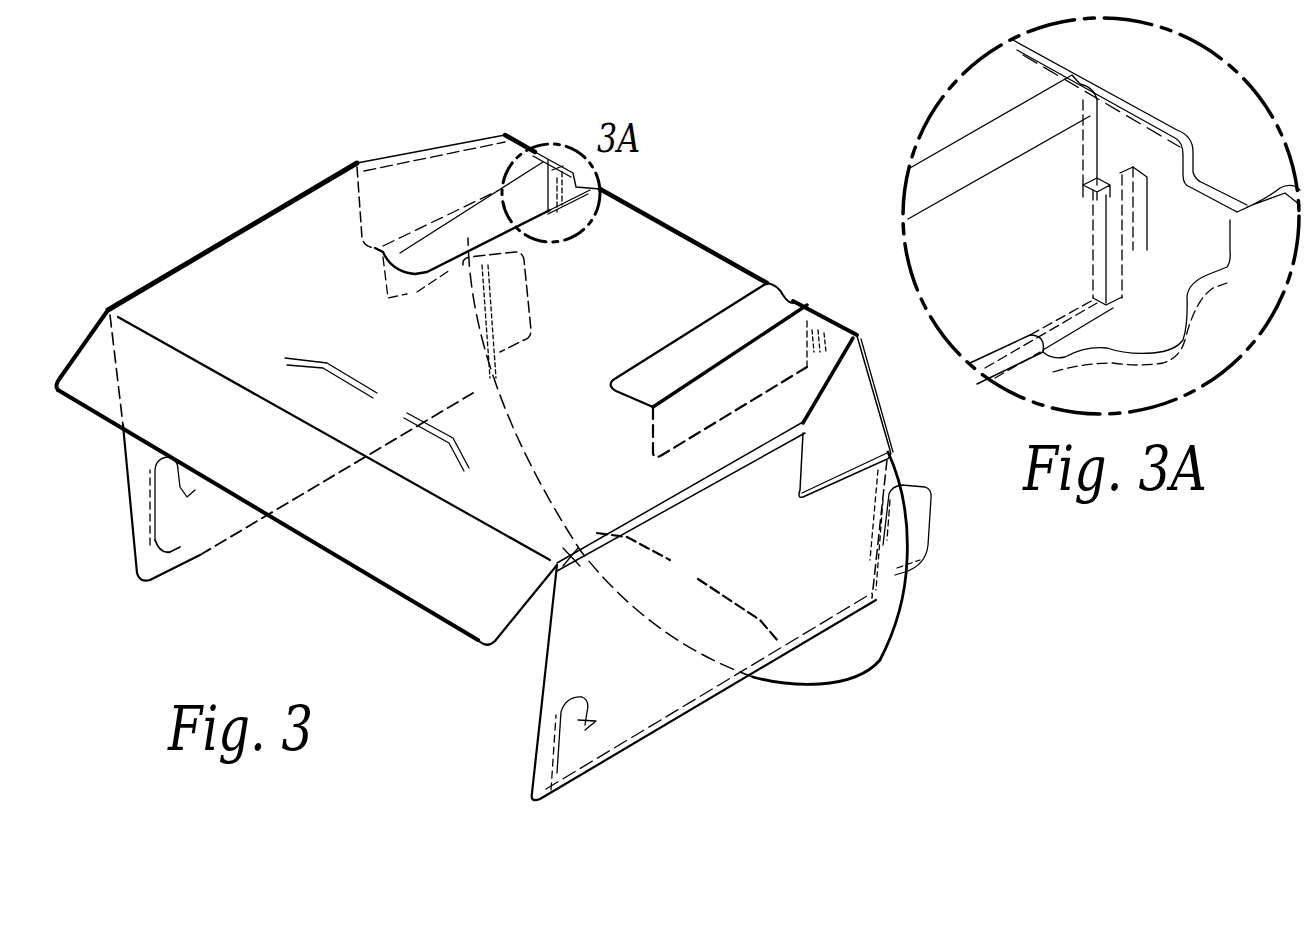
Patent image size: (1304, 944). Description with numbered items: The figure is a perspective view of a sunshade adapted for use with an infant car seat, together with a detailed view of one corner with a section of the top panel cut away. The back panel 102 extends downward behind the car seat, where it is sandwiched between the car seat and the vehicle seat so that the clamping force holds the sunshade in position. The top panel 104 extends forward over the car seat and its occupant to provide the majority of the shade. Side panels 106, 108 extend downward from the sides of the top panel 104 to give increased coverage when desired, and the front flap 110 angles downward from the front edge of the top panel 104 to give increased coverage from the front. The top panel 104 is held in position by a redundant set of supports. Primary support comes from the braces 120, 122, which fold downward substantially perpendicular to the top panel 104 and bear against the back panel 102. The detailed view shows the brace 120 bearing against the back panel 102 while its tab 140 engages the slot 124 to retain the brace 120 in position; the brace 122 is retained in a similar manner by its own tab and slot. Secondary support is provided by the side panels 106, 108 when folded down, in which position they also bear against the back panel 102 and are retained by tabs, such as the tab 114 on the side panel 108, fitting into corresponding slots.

In FIG. 3, the back panel 102 is at (853, 686).
In FIG. 3, the top panel 104 is at (298, 242).
In FIG. 3, the side panel 106 is at (200, 557).
In FIG. 3, the side panel 108 is at (613, 767).
In FIG. 3, the front flap 110 is at (400, 597).
In FIG. 3, the tab 114 is at (928, 572).
In FIG. 3, the brace 120 is at (450, 237).
In FIG. 3A, the brace 120 is at (968, 228).
In FIG. 3, the brace 122 is at (750, 380).
In FIG. 3A, the slot 124 is at (1103, 237).
In FIG. 3A, the tab 140 is at (1147, 193).